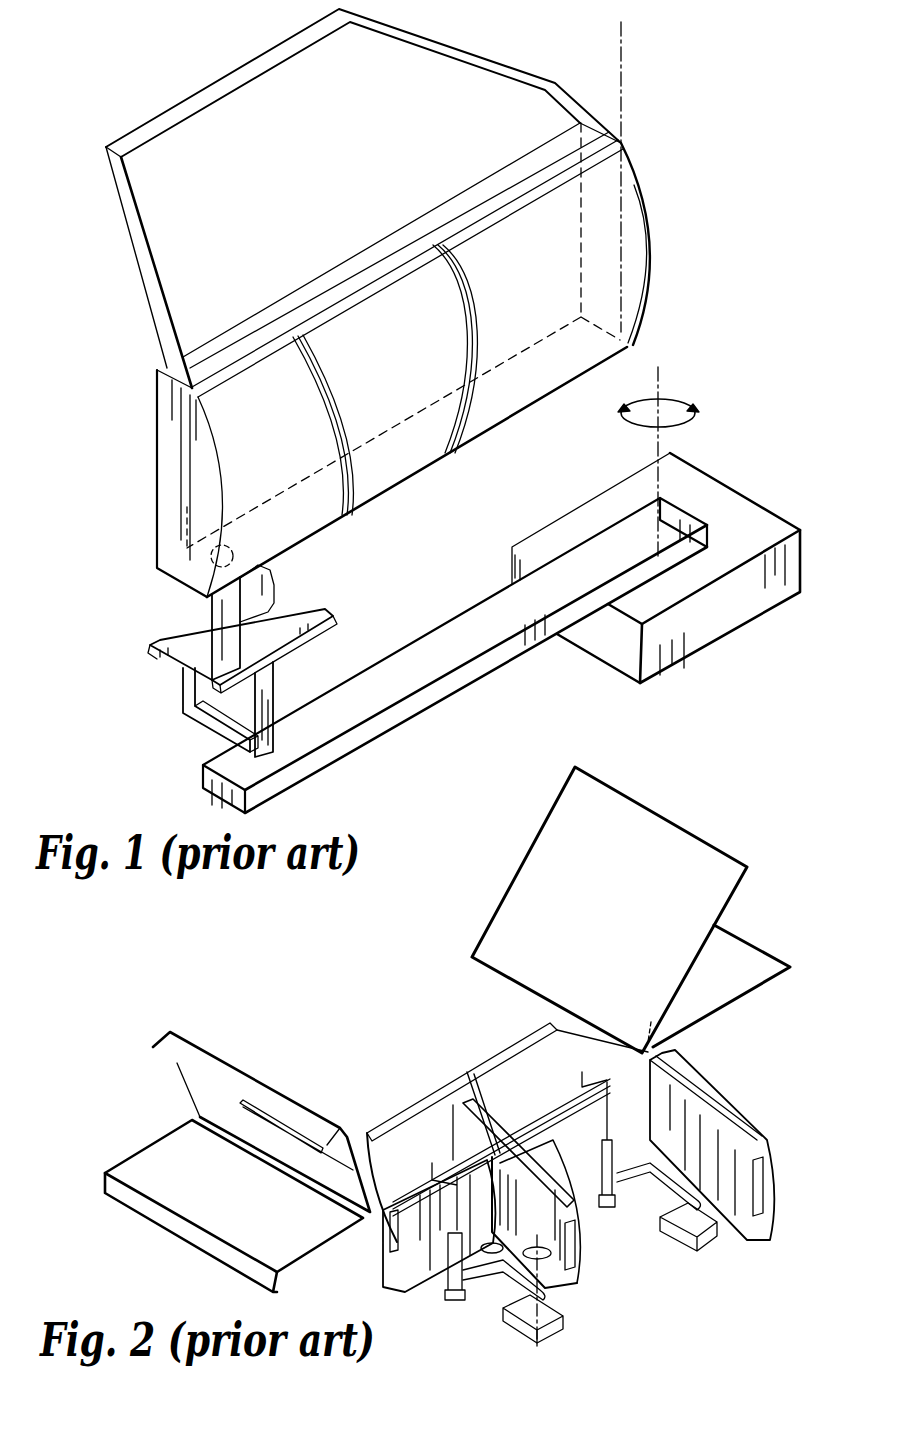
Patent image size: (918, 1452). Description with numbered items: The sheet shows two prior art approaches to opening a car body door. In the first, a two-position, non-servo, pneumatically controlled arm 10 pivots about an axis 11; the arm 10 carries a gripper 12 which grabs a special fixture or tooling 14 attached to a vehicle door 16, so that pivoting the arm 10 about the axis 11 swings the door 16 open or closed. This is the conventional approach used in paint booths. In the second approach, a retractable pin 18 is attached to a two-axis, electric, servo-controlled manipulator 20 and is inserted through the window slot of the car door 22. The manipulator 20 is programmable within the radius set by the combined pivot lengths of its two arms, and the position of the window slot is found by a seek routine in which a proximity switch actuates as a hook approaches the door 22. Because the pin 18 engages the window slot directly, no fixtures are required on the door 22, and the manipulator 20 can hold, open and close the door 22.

In FIG. 1, the arm 10 is at (697, 456).
In FIG. 1, the axis 11 is at (670, 366).
In FIG. 1, the gripper 12 is at (282, 657).
In FIG. 1, the special fixture or tooling 14 is at (203, 604).
In FIG. 1, the vehicle door 16 is at (633, 157).
In FIG. 2, the retractable pin 18 is at (463, 1178).
In FIG. 2, the manipulator 20 is at (578, 1332).
In FIG. 2, the car door 22 is at (390, 1293).